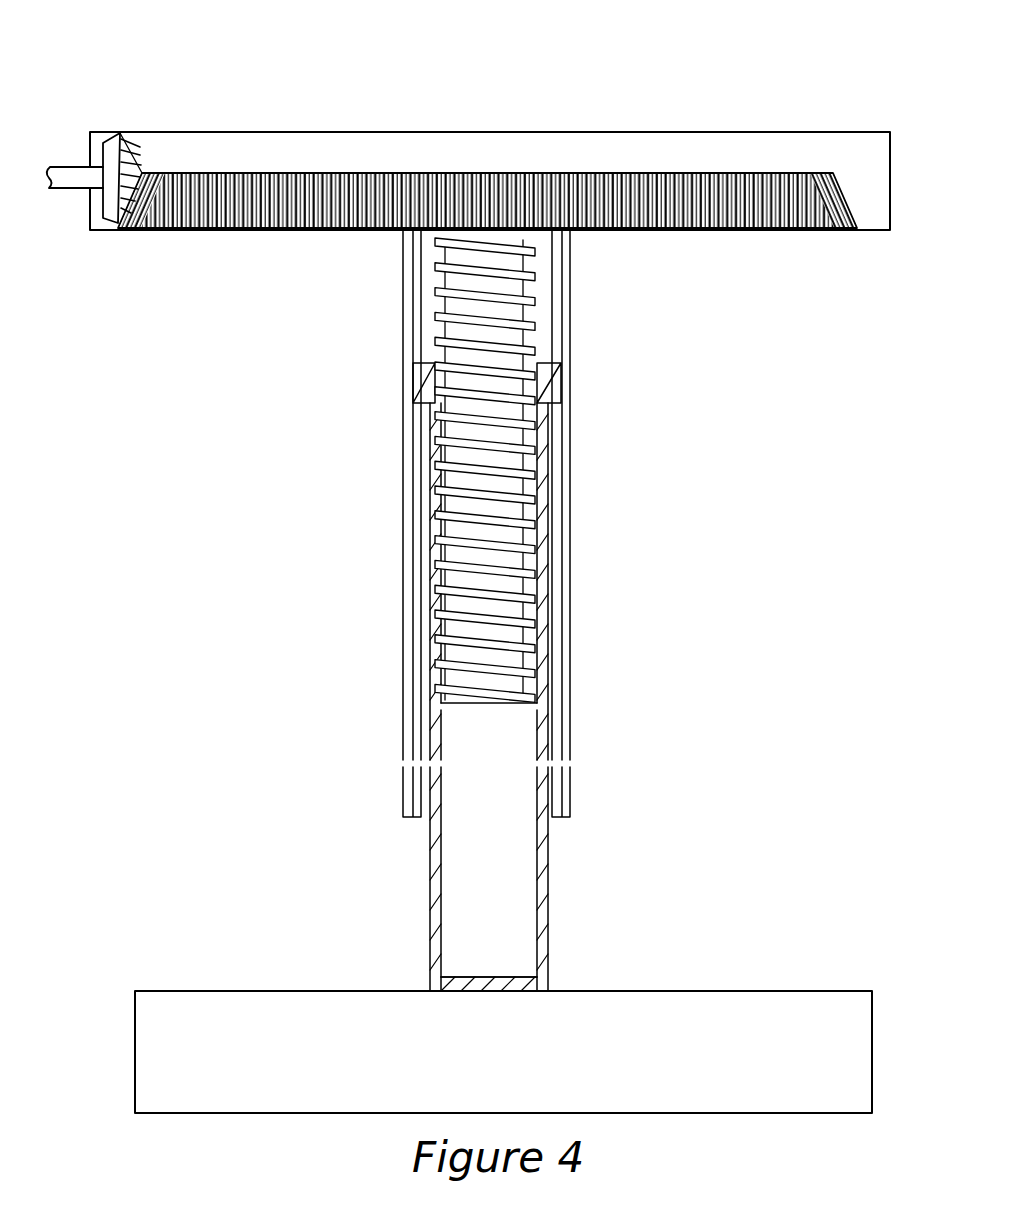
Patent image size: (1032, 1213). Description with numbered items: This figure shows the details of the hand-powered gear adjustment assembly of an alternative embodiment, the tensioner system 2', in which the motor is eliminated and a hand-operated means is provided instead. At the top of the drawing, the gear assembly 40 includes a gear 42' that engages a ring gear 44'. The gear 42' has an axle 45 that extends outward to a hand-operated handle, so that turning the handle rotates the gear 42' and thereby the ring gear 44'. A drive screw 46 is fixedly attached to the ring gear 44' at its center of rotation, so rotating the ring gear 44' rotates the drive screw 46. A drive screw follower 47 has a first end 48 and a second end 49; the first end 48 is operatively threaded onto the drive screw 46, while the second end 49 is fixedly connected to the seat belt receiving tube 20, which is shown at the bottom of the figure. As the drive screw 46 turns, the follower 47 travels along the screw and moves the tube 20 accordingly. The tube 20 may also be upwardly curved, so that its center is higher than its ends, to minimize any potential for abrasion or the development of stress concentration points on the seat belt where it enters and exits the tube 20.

The tensioner system 2' is at (490, 118).
The seat belt receiving tube 20 is at (635, 1007).
The gear assembly 40 is at (643, 384).
The gear 42' is at (165, 145).
The ring gear 44' is at (487, 155).
The axle 45 is at (68, 176).
The drive screw 46 is at (522, 299).
The drive screw follower 47 is at (542, 608).
The first end 48 is at (548, 385).
The second end 49 is at (547, 985).